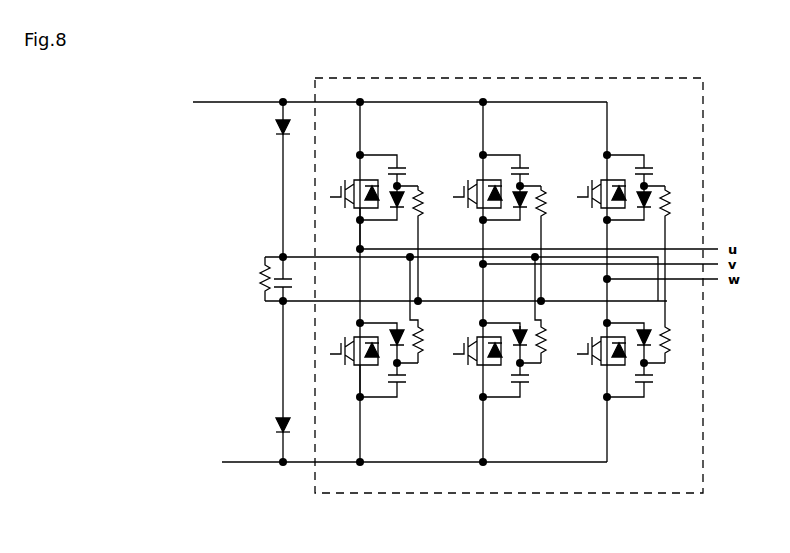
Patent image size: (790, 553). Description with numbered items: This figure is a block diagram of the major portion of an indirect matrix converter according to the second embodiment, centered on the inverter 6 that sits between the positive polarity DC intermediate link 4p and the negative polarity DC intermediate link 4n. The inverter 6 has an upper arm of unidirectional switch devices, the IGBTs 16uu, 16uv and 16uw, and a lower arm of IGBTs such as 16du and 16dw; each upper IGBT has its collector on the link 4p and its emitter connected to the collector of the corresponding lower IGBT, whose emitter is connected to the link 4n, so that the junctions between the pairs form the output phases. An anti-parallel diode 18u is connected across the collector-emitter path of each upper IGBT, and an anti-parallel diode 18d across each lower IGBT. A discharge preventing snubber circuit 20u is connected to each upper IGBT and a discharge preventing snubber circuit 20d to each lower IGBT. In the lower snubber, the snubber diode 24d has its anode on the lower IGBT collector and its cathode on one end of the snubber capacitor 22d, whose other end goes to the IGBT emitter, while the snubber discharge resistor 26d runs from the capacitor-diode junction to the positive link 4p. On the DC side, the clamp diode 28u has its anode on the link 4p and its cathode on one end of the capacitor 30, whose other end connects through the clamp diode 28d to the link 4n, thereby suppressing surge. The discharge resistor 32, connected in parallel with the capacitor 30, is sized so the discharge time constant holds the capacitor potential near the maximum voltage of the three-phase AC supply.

The positive polarity DC intermediate link 4p is at (257, 102).
The negative polarity DC intermediate link 4n is at (265, 463).
The clamp diode 28u is at (290, 138).
The clamp diode 28d is at (290, 434).
The discharge resistor 32 is at (262, 285).
The capacitor 30 is at (282, 290).
The inverter 6 is at (536, 494).
The discharge preventing snubber circuit 20u is at (514, 210).
The discharge preventing snubber circuit 20d is at (513, 367).
The snubber diode 24d is at (520, 340).
The snubber discharge resistor 26d is at (548, 335).
The snubber capacitor 22d is at (529, 384).
The unidirectional switch device (IGBT) 16uu is at (357, 195).
The unidirectional switch device (IGBT) 16uv is at (482, 195).
The unidirectional switch device (IGBT) 16uw is at (606, 195).
The unidirectional switch device (IGBT) 16du is at (355, 365).
The unidirectional switch device (IGBT) 16dw is at (606, 365).
The anti-parallel diode 18u is at (358, 210).
The anti-parallel diode 18d is at (378, 399).